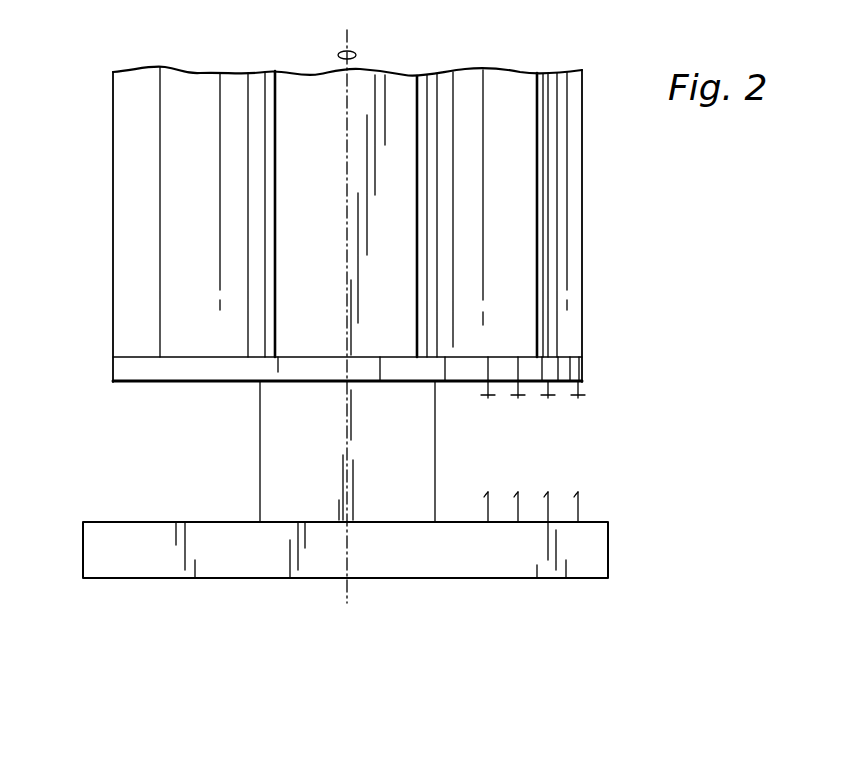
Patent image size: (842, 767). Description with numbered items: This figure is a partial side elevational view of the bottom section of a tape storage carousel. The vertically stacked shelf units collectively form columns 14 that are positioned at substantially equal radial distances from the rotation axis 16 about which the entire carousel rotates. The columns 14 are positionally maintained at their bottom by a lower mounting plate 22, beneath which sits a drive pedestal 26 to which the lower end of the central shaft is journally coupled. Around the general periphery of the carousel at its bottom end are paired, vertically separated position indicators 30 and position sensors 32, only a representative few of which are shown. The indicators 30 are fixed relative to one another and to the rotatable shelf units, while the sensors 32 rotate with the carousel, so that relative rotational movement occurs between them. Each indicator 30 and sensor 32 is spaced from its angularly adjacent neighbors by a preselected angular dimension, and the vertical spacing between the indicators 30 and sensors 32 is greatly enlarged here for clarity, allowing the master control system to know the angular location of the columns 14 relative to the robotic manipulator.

The columns 14 is at (125, 218).
The rotation axis 16 is at (356, 52).
The lower mounting plate 22 is at (125, 374).
The drive pedestal 26 is at (316, 453).
The position indicators 30 is at (488, 494).
The position sensors 32 is at (488, 400).